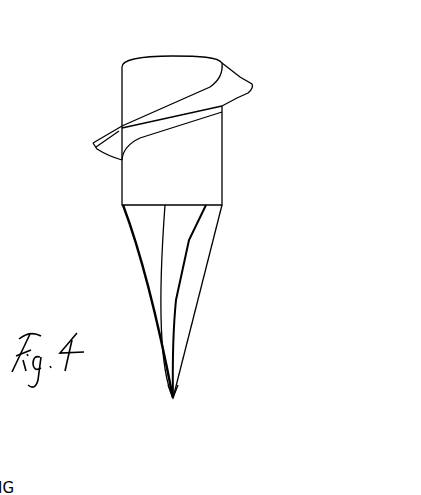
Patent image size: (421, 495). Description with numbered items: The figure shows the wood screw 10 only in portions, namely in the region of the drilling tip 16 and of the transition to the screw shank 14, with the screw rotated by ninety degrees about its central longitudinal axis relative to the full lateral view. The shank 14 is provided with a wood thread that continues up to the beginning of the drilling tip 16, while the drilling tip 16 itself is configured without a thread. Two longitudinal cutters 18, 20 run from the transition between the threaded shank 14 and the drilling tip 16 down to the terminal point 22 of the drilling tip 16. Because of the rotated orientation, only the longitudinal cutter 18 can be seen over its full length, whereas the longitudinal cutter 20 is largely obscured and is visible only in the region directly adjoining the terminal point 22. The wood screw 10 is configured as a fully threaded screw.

The wood screw 10 is at (156, 259).
The screw shank 14 is at (205, 158).
The drilling tip 16 is at (148, 320).
The longitudinal cutter 18 is at (163, 260).
The longitudinal cutter 20 is at (197, 364).
The terminal point 22 is at (173, 398).